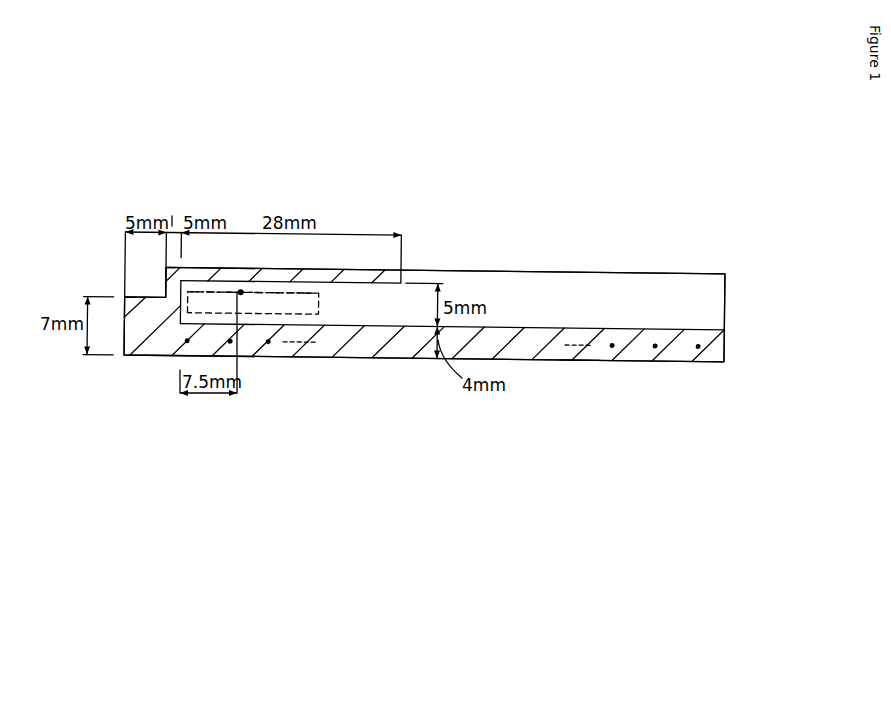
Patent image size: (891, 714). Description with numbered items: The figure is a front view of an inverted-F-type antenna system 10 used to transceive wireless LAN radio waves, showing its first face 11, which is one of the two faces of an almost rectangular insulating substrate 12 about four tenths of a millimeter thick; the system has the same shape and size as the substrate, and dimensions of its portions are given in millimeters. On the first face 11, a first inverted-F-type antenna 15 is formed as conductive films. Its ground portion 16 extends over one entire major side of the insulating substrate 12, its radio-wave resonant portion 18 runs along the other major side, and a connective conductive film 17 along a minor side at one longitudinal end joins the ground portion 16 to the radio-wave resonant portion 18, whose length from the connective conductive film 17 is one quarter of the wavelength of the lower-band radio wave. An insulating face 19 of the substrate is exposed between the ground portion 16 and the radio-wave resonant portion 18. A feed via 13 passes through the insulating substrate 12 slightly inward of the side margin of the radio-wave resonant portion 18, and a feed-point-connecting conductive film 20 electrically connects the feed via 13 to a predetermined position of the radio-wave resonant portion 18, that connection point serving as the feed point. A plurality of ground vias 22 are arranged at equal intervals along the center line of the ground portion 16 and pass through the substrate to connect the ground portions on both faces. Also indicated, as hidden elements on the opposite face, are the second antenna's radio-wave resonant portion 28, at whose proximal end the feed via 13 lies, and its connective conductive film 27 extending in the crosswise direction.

The inverted-F-type antenna system 10 is at (445, 197).
The first face 11 is at (727, 308).
The insulating substrate 12 is at (567, 283).
The feed via 13 is at (252, 318).
The first inverted-F-type antenna 15 is at (581, 363).
The ground portion 16 is at (398, 347).
The connective conductive film 17 is at (167, 299).
The radio-wave resonant portion 18 is at (353, 266).
The insulating face 19 is at (380, 298).
The feed-point-connecting conductive film 20 is at (239, 289).
The ground vias 22 is at (700, 348).
The connective conductive film 27 is at (172, 308).
The radio-wave resonant portion 28 is at (320, 298).